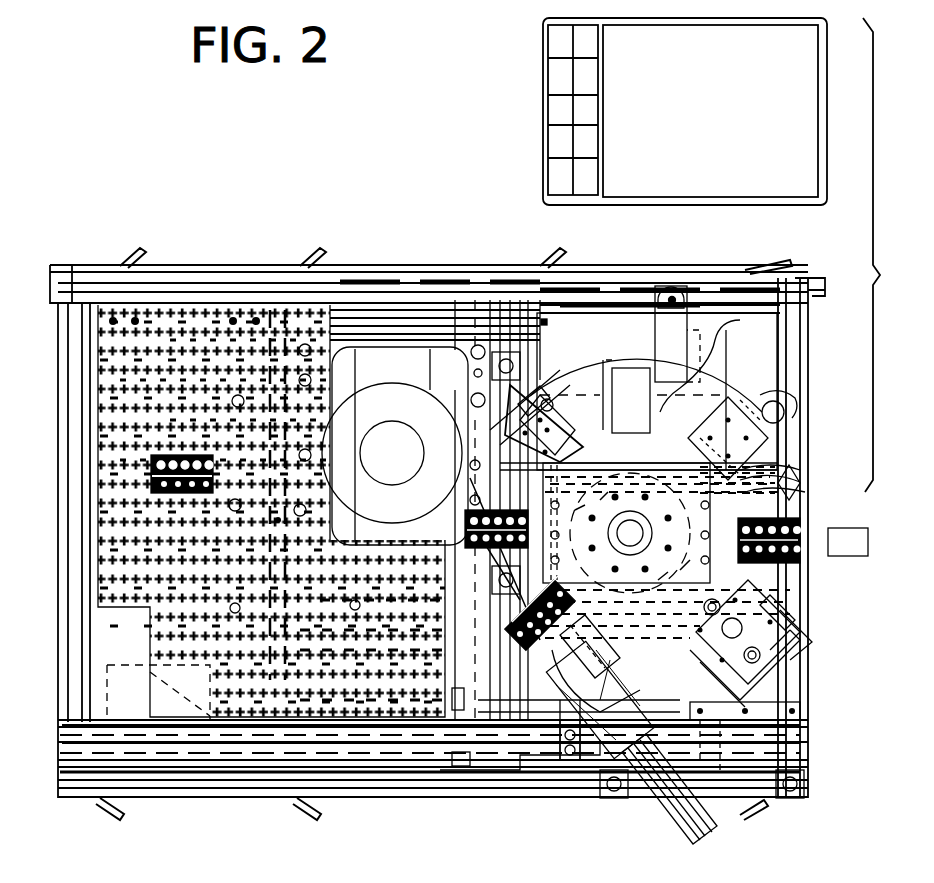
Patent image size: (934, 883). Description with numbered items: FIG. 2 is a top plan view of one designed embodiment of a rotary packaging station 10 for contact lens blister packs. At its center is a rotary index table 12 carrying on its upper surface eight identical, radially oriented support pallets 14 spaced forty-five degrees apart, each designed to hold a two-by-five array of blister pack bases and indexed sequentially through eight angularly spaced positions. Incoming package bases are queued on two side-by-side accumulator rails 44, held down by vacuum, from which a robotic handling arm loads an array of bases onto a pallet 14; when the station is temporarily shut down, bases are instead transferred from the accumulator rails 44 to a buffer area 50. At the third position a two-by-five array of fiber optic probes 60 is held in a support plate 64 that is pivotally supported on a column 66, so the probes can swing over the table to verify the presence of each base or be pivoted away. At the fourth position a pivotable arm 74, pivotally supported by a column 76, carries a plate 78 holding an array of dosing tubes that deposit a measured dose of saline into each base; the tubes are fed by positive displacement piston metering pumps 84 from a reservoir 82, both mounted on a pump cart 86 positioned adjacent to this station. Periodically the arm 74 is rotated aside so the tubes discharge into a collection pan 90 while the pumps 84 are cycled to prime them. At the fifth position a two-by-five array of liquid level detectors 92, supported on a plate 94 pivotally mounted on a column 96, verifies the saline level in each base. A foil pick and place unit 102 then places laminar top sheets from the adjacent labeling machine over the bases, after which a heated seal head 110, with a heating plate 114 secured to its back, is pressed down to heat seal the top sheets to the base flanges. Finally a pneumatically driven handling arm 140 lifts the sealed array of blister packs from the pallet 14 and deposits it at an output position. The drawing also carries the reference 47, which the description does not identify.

The rotary packaging station 10 is at (468, 256).
The rotary index table 12 is at (782, 362).
The support pallet 14 is at (488, 618).
The accumulator rails 44 is at (117, 723).
The rotary drive 47 is at (390, 452).
The buffer area 50 is at (182, 488).
The fiber optic probes 60 is at (558, 448).
The support plate 64 is at (553, 406).
The column 66 is at (524, 392).
The pivotable arm 74 is at (640, 370).
The column 76 is at (672, 296).
The plate 78 is at (606, 372).
The reservoir 82 is at (708, 122).
The pumps 84 is at (560, 178).
The pump cart 86 is at (815, 103).
The collection pan 90 is at (728, 350).
The liquid level detectors 92 is at (785, 420).
The plate 94 is at (785, 462).
The column 96 is at (790, 382).
The foil pick and place unit 102 is at (812, 540).
The heated seal head 110 is at (808, 670).
The heating plate 114 is at (812, 672).
The handling arm 140 is at (668, 724).